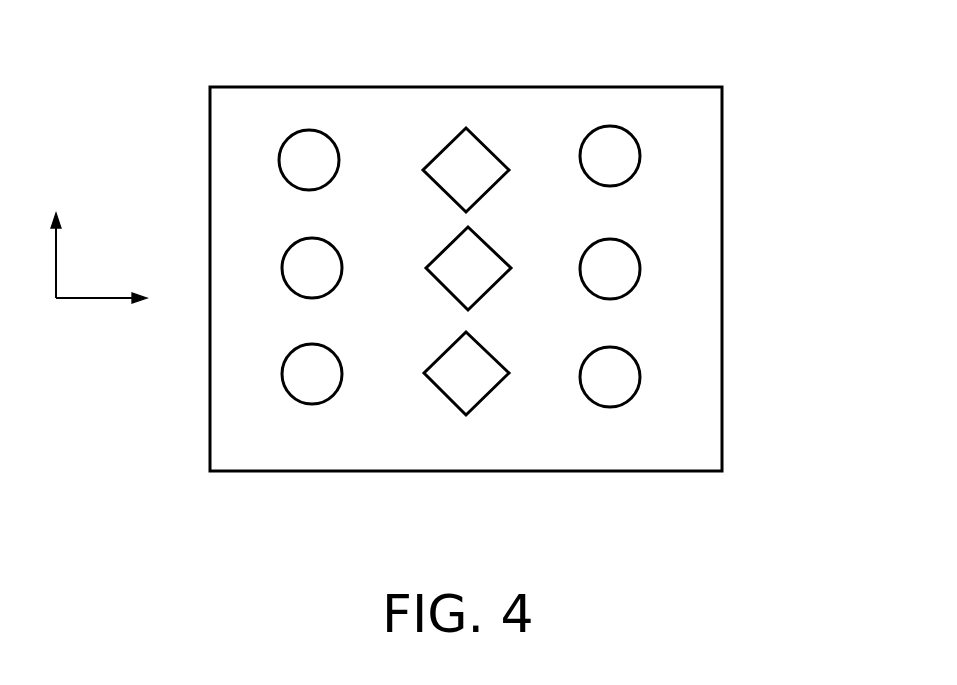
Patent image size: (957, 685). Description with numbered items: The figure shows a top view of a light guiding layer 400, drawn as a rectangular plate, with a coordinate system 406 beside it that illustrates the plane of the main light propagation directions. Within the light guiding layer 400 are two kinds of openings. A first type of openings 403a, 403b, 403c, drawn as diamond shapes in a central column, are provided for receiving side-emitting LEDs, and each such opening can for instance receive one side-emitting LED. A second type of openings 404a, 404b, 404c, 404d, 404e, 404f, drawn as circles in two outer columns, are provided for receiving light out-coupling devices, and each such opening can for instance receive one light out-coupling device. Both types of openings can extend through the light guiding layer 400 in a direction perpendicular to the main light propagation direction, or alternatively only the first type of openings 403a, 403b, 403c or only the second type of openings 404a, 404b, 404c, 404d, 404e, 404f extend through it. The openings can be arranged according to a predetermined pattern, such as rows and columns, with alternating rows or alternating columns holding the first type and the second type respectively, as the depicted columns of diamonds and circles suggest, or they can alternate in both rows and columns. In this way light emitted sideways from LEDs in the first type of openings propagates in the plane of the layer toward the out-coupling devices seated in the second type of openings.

The light guiding layer 400 is at (770, 178).
The first type of opening 403a is at (466, 128).
The first type of opening 403b is at (448, 243).
The first type of opening 403c is at (466, 415).
The second type of opening 404a is at (308, 130).
The second type of opening 404b is at (282, 268).
The second type of opening 404c is at (312, 405).
The second type of opening 404d is at (610, 407).
The second type of opening 404e is at (640, 270).
The second type of opening 404f is at (606, 126).
The coordinate system 406 is at (93, 298).